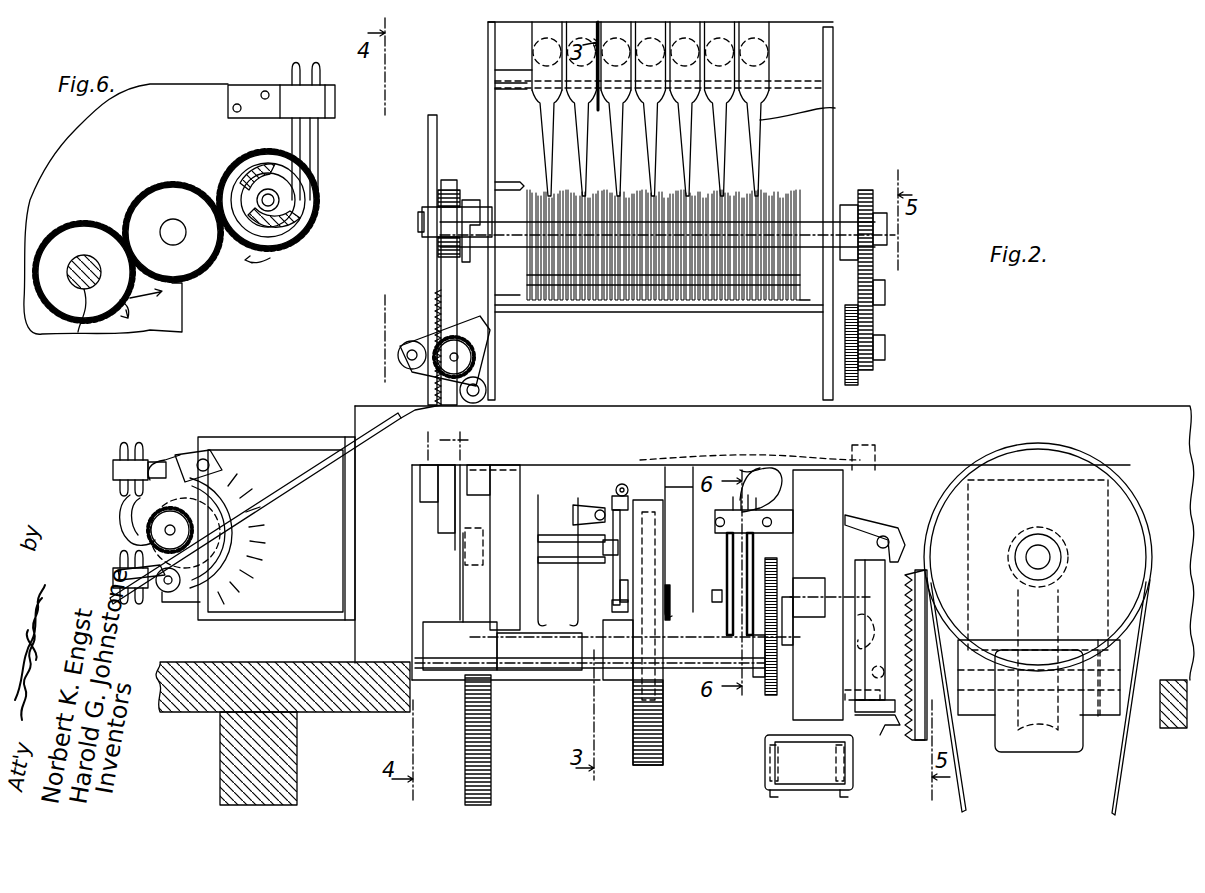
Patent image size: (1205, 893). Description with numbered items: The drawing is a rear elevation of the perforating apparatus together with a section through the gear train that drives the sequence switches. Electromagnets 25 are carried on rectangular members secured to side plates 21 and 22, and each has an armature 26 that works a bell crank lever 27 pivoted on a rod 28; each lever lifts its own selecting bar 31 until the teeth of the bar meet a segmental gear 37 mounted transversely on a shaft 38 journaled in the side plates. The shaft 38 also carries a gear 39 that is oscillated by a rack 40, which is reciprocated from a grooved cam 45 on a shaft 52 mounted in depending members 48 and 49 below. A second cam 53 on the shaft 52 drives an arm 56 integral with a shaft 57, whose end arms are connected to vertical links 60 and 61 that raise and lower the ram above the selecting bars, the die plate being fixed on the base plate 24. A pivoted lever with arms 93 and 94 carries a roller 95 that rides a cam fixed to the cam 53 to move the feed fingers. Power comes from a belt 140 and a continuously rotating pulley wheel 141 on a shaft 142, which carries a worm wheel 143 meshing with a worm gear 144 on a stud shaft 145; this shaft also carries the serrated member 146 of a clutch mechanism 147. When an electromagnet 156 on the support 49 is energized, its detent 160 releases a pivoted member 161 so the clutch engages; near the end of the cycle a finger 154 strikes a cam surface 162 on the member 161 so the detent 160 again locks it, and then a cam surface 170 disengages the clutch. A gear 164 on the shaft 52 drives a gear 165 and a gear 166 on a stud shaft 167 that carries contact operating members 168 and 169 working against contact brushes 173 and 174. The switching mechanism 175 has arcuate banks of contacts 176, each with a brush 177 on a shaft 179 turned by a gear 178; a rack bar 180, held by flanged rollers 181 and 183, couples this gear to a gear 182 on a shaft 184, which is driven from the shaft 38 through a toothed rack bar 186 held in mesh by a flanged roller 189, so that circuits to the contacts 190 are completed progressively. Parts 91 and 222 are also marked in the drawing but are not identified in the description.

In FIG. 2, the side plate 21 is at (488, 107).
In FIG. 2, the side plate 22 is at (833, 140).
In FIG. 2, the base plate 24 is at (1050, 420).
In FIG. 2, the electromagnet 25 is at (770, 52).
In FIG. 2, the armature 26 is at (815, 108).
In FIG. 2, the bell crank lever 27 is at (768, 198).
In FIG. 2, the rod 28 is at (800, 300).
In FIG. 2, the selecting bar 31 is at (790, 305).
In FIG. 2, the segmental gear 37 is at (845, 230).
In FIG. 2, the shaft 38 is at (862, 205).
In FIG. 2, the gear 39 is at (445, 190).
In FIG. 2, the rack 40 is at (447, 293).
In FIG. 2, the cam 45 is at (478, 765).
In FIG. 2, the depending member 48 is at (525, 572).
In FIG. 2, the depending member 49 is at (905, 522).
In FIG. 6, the shaft 52 is at (78, 332).
In FIG. 2, the shaft 52 is at (590, 660).
In FIG. 2, the cam 53 is at (645, 760).
In FIG. 2, the arm 56 is at (672, 610).
In FIG. 2, the shaft 57 is at (680, 452).
In FIG. 2, the link 60 is at (462, 440).
In FIG. 2, the link 61 is at (875, 452).
In FIG. 2, the pivot pin 91 is at (615, 484).
In FIG. 2, the arm 93 is at (610, 578).
In FIG. 2, the arm 94 is at (580, 512).
In FIG. 2, the roller 95 is at (612, 608).
In FIG. 2, the belt 140 is at (1118, 792).
In FIG. 2, the pulley wheel 141 is at (1095, 465).
In FIG. 2, the shaft 142 is at (1042, 557).
In FIG. 2, the worm wheel 143 is at (1050, 528).
In FIG. 2, the worm gear 144 is at (1050, 625).
In FIG. 2, the stud shaft 145 is at (1100, 722).
In FIG. 2, the serrated member 146 is at (918, 745).
In FIG. 2, the clutch mechanism 147 is at (915, 539).
In FIG. 2, the finger 154 is at (870, 672).
In FIG. 2, the electromagnet 156 is at (815, 775).
In FIG. 2, the detent 160 is at (882, 738).
In FIG. 2, the pivoted member 161 is at (870, 710).
In FIG. 2, the cam surface 162 is at (855, 645).
In FIG. 6, the gear 164 is at (62, 240).
In FIG. 2, the gear 164 is at (768, 695).
In FIG. 6, the gear 165 is at (148, 200).
In FIG. 2, the gear 165 is at (778, 630).
In FIG. 6, the gear 166 is at (303, 222).
In FIG. 6, the stud shaft 167 is at (278, 195).
In FIG. 2, the stud shaft 167 is at (810, 580).
In FIG. 6, the contact operating member 168 is at (290, 240).
In FIG. 2, the contact operating member 168 is at (750, 566).
In FIG. 2, the contact operating member 169 is at (728, 545).
In FIG. 2, the cam surface 170 is at (845, 690).
In FIG. 6, the contact brush 173 is at (297, 142).
In FIG. 2, the contact brush 173 is at (745, 532).
In FIG. 2, the contact brush 174 is at (747, 475).
In FIG. 2, the switching mechanism 175 is at (103, 515).
In FIG. 2, the bank of contacts 176 is at (238, 588).
In FIG. 2, the brush 177 is at (150, 560).
In FIG. 2, the gear 178 is at (140, 545).
In FIG. 2, the shaft 179 is at (255, 462).
In FIG. 2, the rack bar 180 is at (290, 492).
In FIG. 2, the flanged roller 181 is at (162, 600).
In FIG. 2, the gear 182 is at (468, 360).
In FIG. 2, the flanged roller 183 is at (486, 388).
In FIG. 2, the shaft 184 is at (468, 335).
In FIG. 2, the rack bar 186 is at (428, 257).
In FIG. 2, the flanged roller 189 is at (420, 220).
In FIG. 2, the contacts 190 is at (248, 560).
In FIG. 6, the gear 222 is at (238, 168).